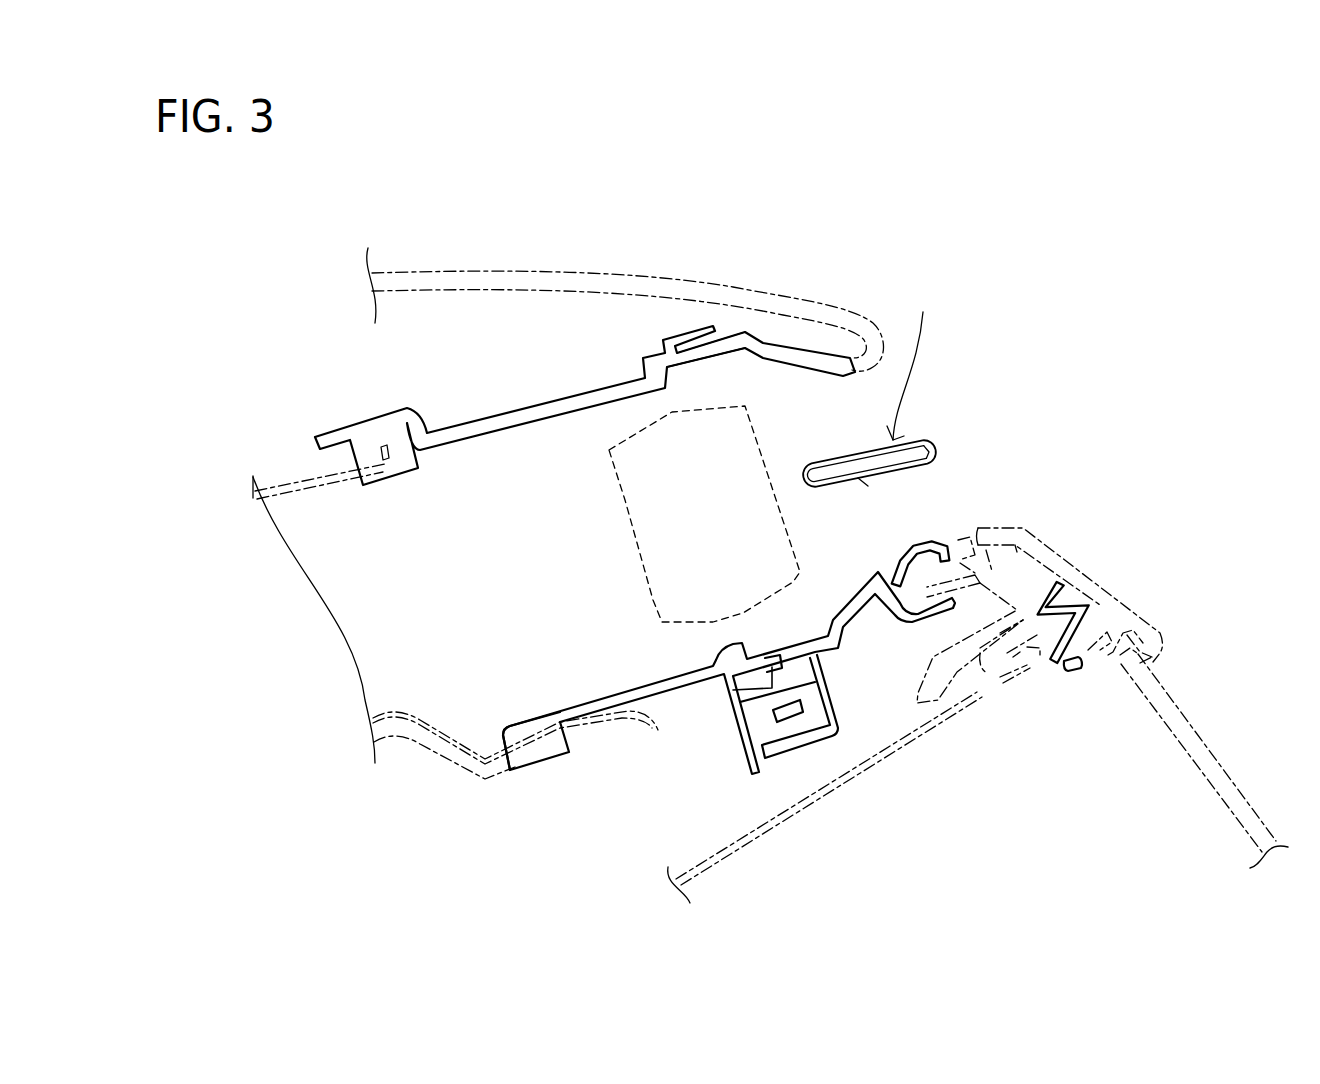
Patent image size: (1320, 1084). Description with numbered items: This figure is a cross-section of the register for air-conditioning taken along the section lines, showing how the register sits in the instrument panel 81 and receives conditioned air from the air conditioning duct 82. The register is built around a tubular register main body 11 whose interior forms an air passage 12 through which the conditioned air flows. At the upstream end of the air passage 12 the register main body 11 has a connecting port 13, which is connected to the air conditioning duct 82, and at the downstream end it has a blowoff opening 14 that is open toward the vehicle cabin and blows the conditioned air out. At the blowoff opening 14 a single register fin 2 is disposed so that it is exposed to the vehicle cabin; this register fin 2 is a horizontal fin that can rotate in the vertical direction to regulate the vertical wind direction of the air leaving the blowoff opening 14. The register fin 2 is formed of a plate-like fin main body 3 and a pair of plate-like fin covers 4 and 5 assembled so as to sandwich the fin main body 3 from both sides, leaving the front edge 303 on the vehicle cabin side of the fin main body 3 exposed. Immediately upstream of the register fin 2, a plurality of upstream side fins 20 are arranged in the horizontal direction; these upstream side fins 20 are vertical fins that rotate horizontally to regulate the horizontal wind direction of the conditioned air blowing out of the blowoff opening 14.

The register fin 2 is at (981, 411).
The fin main body 3 is at (933, 450).
The front edge 303 is at (937, 452).
The fin cover 4 is at (906, 361).
The fin cover 5 is at (860, 478).
The register main body 11 is at (605, 705).
The air passage 12 is at (500, 473).
The connecting port 13 is at (487, 622).
The blowoff opening 14 is at (903, 519).
The upstream side fins 20 is at (720, 440).
The instrument panel 81 is at (627, 283).
The air conditioning duct 82 is at (297, 485).